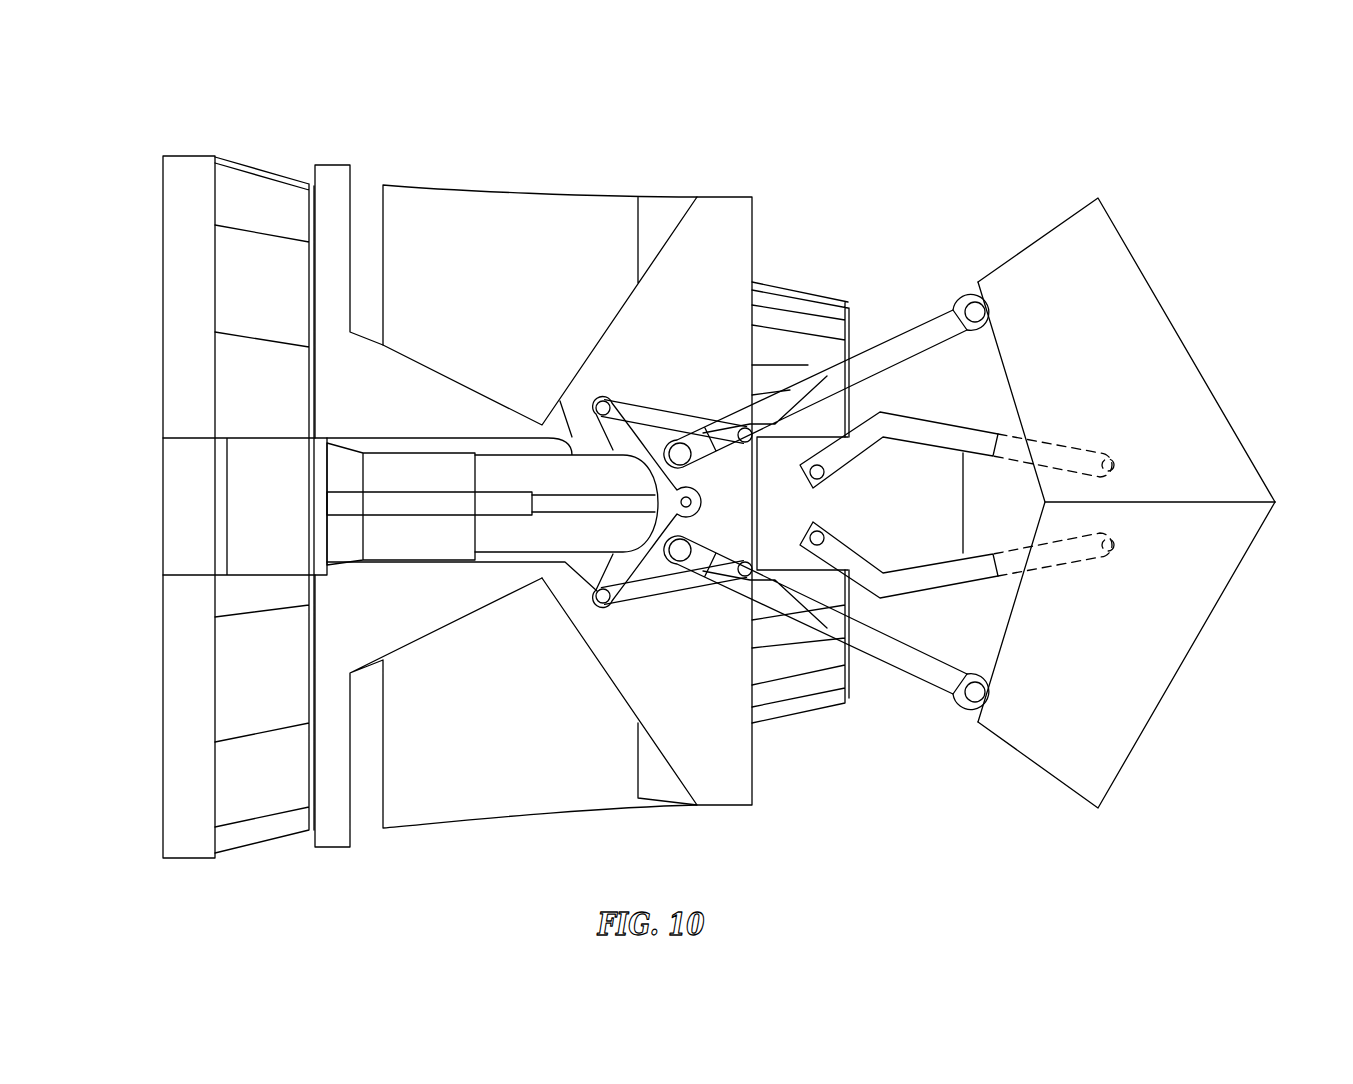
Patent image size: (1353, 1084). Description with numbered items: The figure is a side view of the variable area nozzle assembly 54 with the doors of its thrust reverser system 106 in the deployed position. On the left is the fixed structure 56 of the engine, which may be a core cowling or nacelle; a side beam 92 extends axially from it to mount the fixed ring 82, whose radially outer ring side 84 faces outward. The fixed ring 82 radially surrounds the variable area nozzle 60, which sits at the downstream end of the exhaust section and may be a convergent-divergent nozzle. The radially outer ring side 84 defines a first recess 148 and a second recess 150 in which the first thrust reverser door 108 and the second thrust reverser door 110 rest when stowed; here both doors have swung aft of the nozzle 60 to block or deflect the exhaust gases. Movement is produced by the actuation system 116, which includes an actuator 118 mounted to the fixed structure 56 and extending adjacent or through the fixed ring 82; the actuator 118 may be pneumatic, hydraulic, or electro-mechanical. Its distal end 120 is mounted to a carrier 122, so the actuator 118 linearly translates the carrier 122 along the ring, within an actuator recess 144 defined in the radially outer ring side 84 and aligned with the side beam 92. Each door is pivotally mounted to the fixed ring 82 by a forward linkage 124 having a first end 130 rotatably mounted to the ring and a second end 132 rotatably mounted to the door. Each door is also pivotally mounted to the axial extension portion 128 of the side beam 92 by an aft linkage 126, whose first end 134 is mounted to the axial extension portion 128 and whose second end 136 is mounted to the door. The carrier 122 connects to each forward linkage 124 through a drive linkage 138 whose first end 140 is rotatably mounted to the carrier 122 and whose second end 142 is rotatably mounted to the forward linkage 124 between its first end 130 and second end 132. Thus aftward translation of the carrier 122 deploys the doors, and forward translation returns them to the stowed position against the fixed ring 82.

The variable area nozzle assembly 54 is at (1107, 131).
The fixed structure 56 is at (188, 858).
The variable area nozzle 60 is at (847, 745).
The fixed ring 82 is at (370, 162).
The radially outer ring side 84 is at (726, 197).
The side beam 92 is at (178, 491).
The thrust reverser system 106 is at (1142, 830).
The first thrust reverser door 108 is at (1132, 290).
The second thrust reverser door 110 is at (1200, 608).
The actuation system 116 is at (540, 594).
The actuator 118 is at (417, 495).
The distal end 120 is at (712, 501).
The carrier 122 is at (572, 437).
The forward linkage 124 is at (905, 350).
The aft linkage 126 is at (975, 437).
The axial extension portion 128 is at (920, 545).
The first end 130 is at (670, 436).
The second end 132 is at (958, 288).
The first end 134 is at (857, 481).
The second end 136 is at (1115, 438).
The drive linkage 138 is at (652, 590).
The first end 140 is at (600, 622).
The second end 142 is at (727, 603).
The actuator recess 144 is at (430, 542).
The first recess 148 is at (499, 182).
The second recess 150 is at (488, 838).